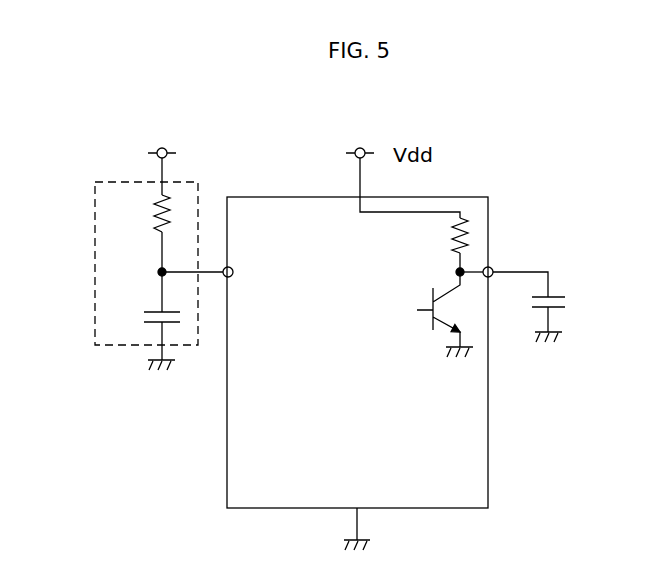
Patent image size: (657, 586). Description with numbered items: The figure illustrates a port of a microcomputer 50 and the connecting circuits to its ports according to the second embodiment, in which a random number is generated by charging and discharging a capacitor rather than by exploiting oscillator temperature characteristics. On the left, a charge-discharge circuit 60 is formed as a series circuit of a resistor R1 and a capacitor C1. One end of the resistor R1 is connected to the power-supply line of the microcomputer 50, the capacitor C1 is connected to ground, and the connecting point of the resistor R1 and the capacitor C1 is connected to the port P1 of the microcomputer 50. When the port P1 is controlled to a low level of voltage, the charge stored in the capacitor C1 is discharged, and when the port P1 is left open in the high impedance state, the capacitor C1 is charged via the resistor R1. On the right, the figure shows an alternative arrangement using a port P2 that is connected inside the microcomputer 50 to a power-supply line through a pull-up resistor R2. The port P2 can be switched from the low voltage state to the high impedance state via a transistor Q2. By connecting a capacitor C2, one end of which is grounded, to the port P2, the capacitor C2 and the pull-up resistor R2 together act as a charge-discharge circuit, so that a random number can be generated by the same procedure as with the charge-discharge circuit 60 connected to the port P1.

The microcomputer 50 is at (285, 197).
The charge-discharge circuit 60 is at (124, 256).
The resistor R1 is at (141, 213).
The capacitor C1 is at (142, 316).
The port P1 is at (221, 274).
The pull-up resistor R2 is at (467, 234).
The port P2 is at (494, 262).
The capacitor C2 is at (549, 307).
The transistor Q2 is at (460, 315).